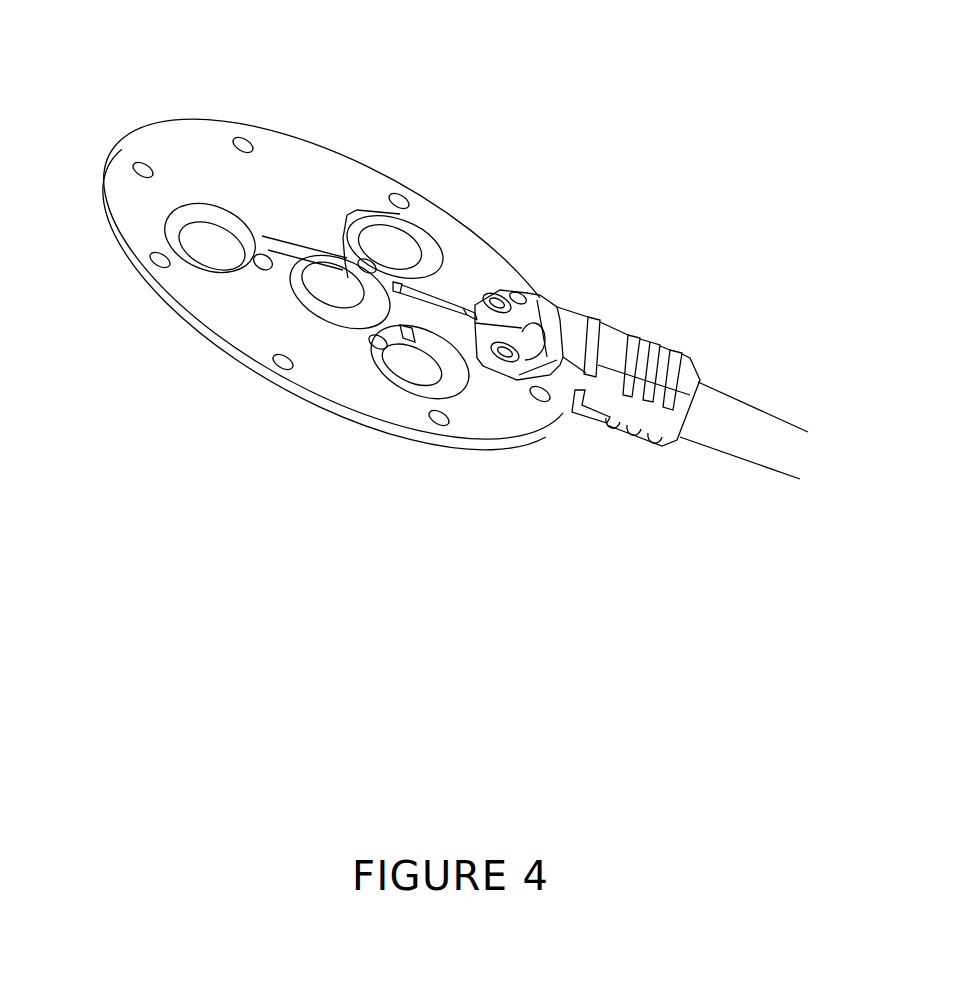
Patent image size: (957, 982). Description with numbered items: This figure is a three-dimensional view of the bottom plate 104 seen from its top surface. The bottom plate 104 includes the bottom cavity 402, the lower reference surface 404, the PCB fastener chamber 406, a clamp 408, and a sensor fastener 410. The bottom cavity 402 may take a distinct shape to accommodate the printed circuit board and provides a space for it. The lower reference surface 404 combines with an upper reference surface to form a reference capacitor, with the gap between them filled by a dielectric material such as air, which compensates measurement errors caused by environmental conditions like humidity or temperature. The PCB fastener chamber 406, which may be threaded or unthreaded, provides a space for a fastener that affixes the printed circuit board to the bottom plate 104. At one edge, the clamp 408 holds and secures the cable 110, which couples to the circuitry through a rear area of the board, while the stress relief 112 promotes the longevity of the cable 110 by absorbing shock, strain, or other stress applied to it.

The bottom plate 104 is at (585, 578).
The PCB fastener chamber 406 is at (260, 245).
The lower reference surface 404 is at (338, 298).
The bottom cavity 402 is at (448, 327).
The clamp 408 is at (477, 360).
The sensor fastener 410 is at (527, 289).
The stress relief 112 is at (660, 440).
The cable 110 is at (707, 413).